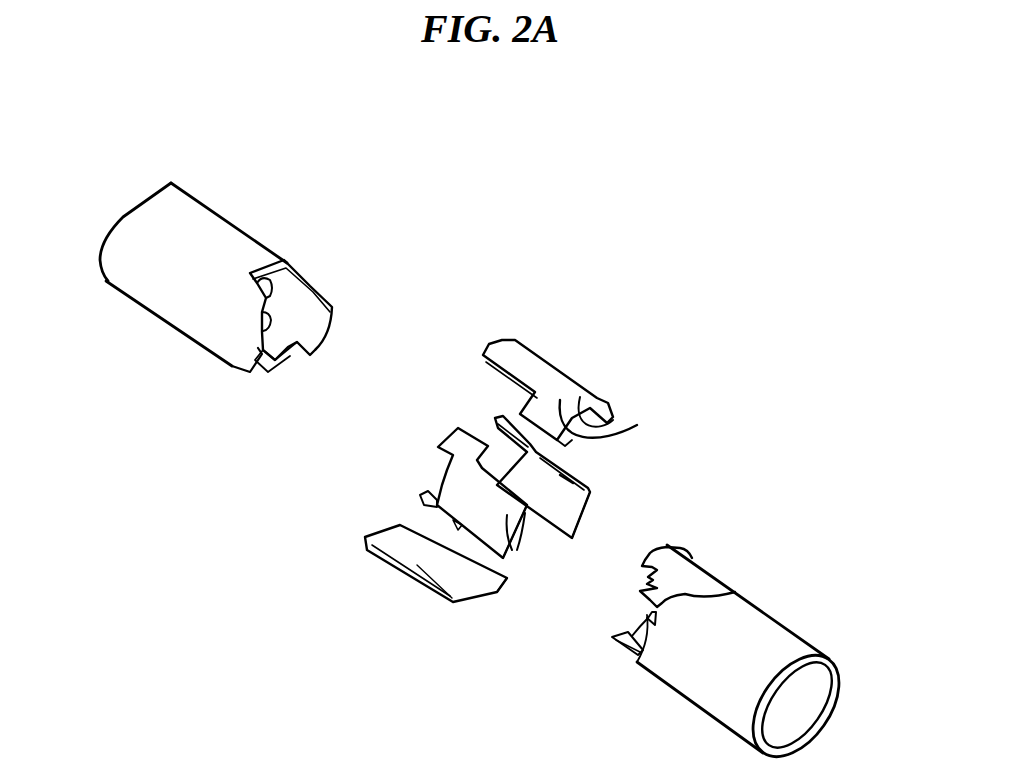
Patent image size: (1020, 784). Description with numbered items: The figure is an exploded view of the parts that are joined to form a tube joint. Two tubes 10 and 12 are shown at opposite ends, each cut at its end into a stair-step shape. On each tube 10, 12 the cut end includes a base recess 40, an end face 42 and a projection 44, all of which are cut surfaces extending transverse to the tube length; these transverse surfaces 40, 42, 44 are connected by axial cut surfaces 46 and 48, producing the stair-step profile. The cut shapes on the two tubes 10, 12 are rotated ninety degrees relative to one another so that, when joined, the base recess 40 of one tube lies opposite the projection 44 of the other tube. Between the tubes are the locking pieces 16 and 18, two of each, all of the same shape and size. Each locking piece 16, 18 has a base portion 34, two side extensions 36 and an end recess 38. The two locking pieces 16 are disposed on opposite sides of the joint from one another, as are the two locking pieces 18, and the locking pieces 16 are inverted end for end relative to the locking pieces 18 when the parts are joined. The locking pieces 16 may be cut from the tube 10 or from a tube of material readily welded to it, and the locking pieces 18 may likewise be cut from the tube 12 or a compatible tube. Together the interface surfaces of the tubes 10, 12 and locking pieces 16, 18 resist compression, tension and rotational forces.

The tube 10 is at (193, 200).
The tube 12 is at (790, 637).
The locking piece 16 is at (552, 377).
The locking piece 18 is at (583, 480).
The base portion 34 is at (523, 353).
The side extension 36 is at (450, 457).
The end recess 38 is at (485, 448).
The base recess 40 is at (283, 262).
The end face 42 is at (318, 285).
The projection 44 is at (337, 320).
The axial cut surface 46 is at (296, 270).
The axial cut surface 48 is at (262, 348).